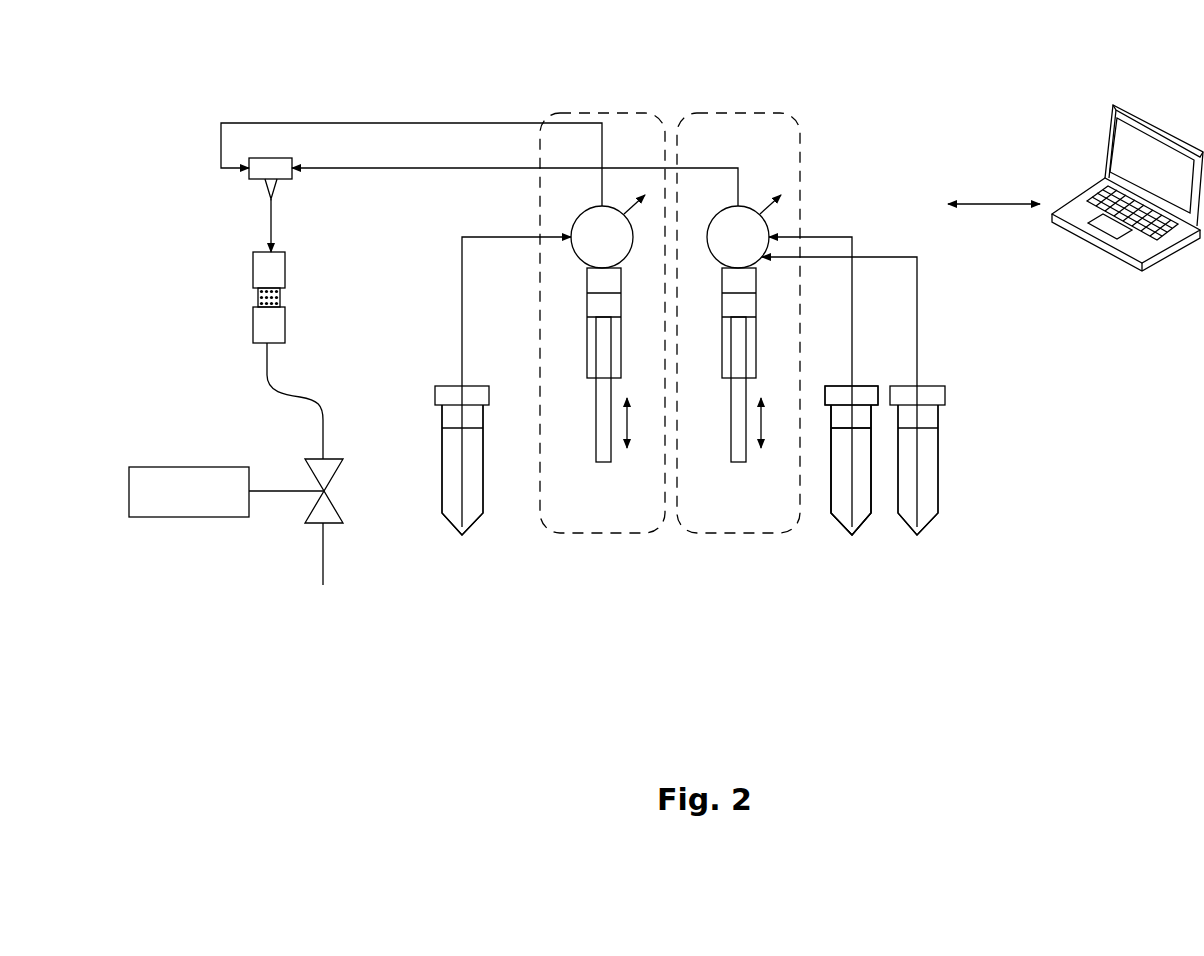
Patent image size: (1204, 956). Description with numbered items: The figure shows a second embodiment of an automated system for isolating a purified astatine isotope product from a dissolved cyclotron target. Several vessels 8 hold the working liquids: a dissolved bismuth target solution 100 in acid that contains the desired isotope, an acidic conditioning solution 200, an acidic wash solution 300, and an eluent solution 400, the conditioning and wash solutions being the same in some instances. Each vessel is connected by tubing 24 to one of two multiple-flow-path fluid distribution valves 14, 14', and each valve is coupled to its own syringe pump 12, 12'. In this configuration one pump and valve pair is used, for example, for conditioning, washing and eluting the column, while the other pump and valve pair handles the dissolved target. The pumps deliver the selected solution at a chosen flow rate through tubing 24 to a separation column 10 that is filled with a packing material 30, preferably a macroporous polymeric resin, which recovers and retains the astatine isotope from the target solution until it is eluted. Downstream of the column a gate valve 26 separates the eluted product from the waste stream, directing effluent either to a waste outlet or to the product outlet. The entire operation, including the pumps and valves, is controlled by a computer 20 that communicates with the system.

The tubing 24 is at (292, 123).
The packing material 30 is at (258, 292).
The separation column 10 is at (258, 297).
The gate valve 26 is at (305, 462).
The syringe pump 12' is at (602, 323).
The syringe pump 12 is at (738, 323).
The fluid distribution valve 14' is at (608, 328).
The fluid distribution valve 14 is at (744, 328).
The vessel 8 is at (470, 530).
The target solution 100 is at (449, 505).
The conditioning solution 200 is at (842, 520).
The wash solution 300 is at (842, 520).
The eluent solution 400 is at (908, 513).
The computer 20 is at (1157, 255).